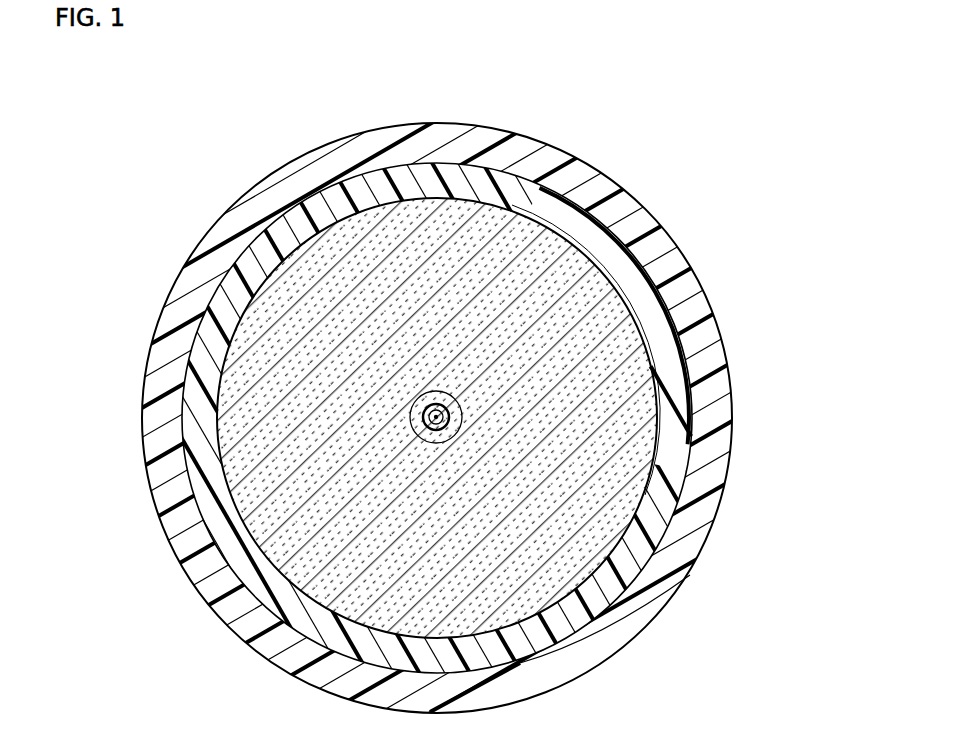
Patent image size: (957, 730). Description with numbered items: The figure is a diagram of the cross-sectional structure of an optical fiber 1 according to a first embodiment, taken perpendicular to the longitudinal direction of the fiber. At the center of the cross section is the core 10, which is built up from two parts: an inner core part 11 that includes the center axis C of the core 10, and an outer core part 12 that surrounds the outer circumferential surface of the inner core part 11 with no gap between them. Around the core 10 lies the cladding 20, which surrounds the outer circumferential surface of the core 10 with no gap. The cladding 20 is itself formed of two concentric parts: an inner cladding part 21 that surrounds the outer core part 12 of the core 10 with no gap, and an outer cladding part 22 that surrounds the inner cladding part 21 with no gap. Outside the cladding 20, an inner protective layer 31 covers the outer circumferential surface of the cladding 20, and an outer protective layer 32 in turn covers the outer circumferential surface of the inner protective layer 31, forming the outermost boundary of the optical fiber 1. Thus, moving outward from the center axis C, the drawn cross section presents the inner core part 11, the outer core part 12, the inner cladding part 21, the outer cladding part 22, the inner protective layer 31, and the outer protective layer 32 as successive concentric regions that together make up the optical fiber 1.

The optical fiber 1 is at (752, 84).
The core 10 is at (253, 86).
The inner core part 11 is at (430, 400).
The outer core part 12 is at (436, 392).
The cladding 20 is at (562, 88).
The inner cladding part 21 is at (583, 223).
The outer cladding part 22 is at (447, 392).
The inner protective layer 31 is at (673, 357).
The outer protective layer 32 is at (687, 282).
The center axis C is at (441, 394).